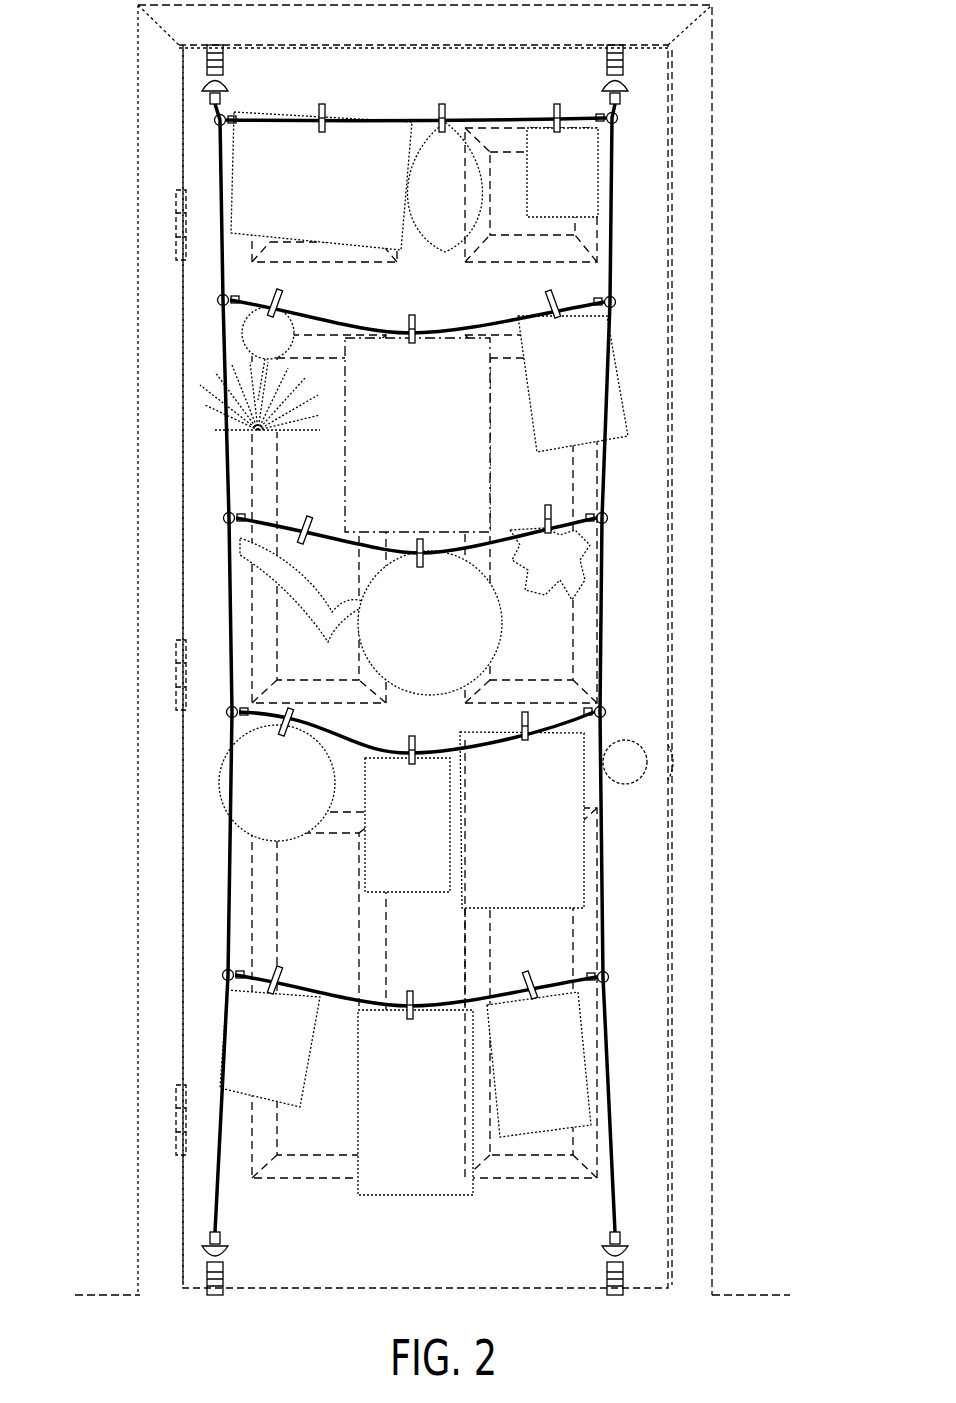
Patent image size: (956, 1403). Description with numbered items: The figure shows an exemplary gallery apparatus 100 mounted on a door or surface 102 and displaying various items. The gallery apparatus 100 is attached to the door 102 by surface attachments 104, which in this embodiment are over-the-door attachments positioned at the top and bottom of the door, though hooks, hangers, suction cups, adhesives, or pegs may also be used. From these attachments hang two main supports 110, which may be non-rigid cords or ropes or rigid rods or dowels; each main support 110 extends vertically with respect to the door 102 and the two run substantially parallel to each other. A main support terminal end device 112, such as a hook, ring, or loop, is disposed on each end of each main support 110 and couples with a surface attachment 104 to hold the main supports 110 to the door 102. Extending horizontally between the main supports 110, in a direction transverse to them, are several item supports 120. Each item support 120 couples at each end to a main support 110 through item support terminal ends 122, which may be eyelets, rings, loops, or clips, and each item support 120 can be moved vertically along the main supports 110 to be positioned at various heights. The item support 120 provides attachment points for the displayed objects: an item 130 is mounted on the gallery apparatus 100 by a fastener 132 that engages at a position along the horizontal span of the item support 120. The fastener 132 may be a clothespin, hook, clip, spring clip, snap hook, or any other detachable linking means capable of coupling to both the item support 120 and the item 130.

The gallery apparatus 100 is at (437, 647).
The door or surface 102 is at (196, 569).
The surface attachments 104 is at (215, 58).
The main supports 110 is at (226, 487).
The main support terminal end device 112 is at (213, 106).
The item support 120 is at (371, 748).
The item support terminal ends 122 is at (221, 299).
The item 130 is at (436, 338).
The fastener 132 is at (410, 331).